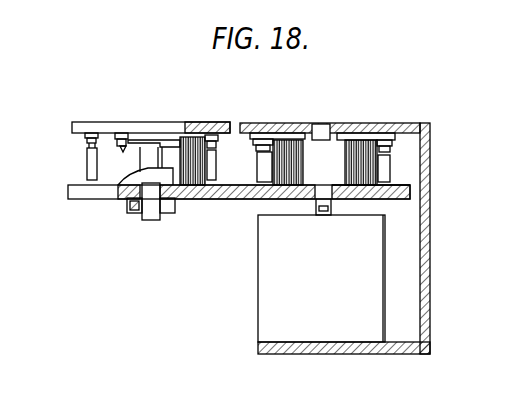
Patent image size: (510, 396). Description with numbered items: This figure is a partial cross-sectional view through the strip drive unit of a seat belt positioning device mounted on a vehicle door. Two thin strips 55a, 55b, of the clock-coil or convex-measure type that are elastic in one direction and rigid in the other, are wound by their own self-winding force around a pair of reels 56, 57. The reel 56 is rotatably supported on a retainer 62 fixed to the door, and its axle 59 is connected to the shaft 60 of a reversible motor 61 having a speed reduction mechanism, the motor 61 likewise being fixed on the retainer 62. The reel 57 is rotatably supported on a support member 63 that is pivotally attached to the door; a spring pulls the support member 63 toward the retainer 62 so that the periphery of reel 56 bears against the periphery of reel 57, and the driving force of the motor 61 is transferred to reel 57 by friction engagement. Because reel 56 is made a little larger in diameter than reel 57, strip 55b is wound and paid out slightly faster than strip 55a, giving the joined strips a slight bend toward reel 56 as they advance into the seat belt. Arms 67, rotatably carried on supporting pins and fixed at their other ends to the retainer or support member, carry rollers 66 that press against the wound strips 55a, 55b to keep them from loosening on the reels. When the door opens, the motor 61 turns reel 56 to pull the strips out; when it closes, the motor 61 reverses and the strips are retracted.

The thin strip 55a is at (287, 122).
The thin strip 55b is at (157, 111).
The reel 56 is at (411, 200).
The reel 57 is at (93, 198).
The axle 59 is at (328, 126).
The shaft 60 is at (313, 207).
The motor 61 is at (262, 278).
The retainer 62 is at (431, 152).
The support member 63 is at (127, 122).
The roller 66 is at (87, 161).
The arm 67 is at (86, 139).